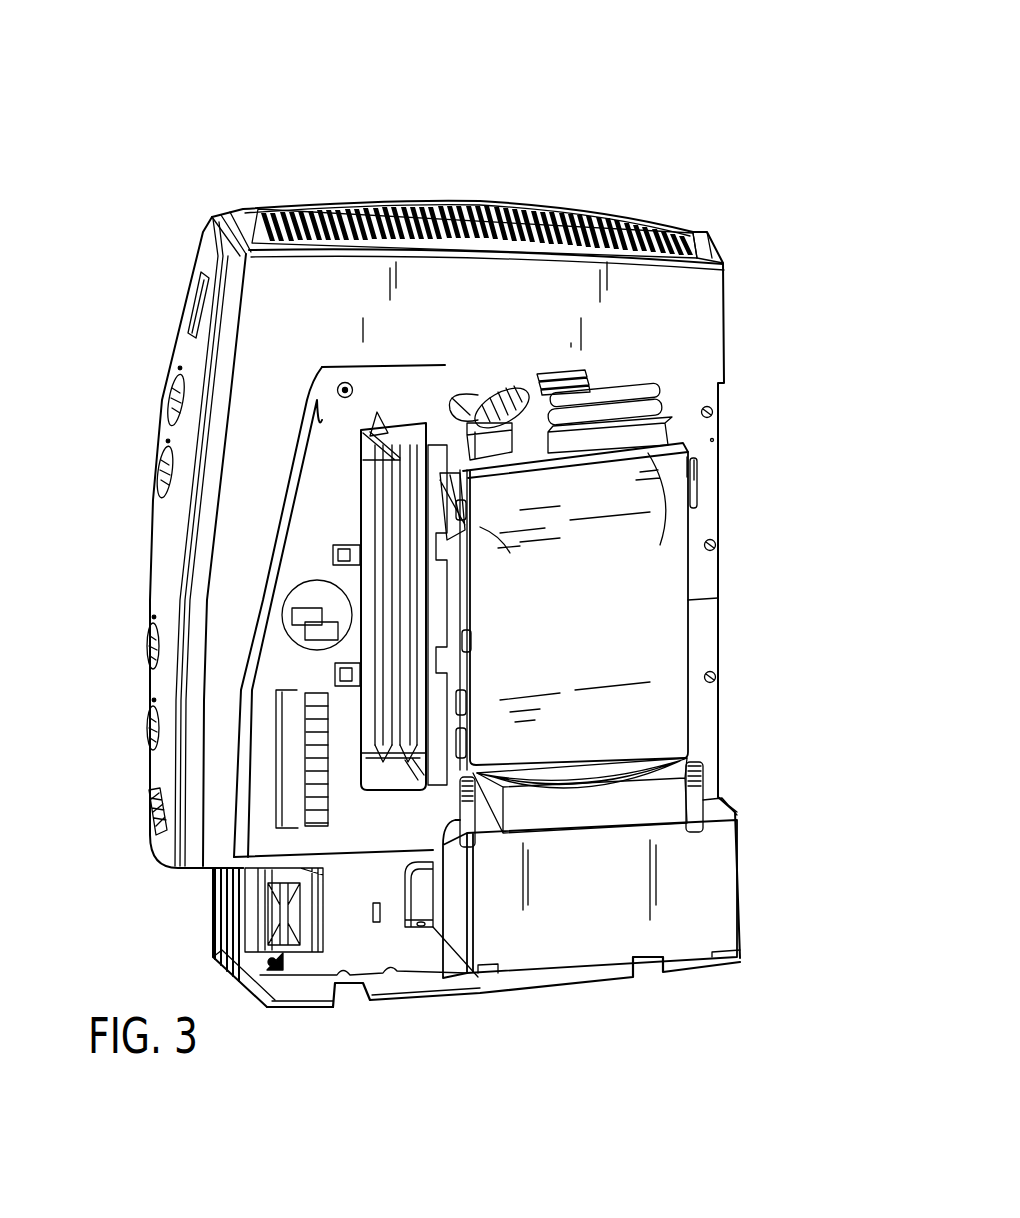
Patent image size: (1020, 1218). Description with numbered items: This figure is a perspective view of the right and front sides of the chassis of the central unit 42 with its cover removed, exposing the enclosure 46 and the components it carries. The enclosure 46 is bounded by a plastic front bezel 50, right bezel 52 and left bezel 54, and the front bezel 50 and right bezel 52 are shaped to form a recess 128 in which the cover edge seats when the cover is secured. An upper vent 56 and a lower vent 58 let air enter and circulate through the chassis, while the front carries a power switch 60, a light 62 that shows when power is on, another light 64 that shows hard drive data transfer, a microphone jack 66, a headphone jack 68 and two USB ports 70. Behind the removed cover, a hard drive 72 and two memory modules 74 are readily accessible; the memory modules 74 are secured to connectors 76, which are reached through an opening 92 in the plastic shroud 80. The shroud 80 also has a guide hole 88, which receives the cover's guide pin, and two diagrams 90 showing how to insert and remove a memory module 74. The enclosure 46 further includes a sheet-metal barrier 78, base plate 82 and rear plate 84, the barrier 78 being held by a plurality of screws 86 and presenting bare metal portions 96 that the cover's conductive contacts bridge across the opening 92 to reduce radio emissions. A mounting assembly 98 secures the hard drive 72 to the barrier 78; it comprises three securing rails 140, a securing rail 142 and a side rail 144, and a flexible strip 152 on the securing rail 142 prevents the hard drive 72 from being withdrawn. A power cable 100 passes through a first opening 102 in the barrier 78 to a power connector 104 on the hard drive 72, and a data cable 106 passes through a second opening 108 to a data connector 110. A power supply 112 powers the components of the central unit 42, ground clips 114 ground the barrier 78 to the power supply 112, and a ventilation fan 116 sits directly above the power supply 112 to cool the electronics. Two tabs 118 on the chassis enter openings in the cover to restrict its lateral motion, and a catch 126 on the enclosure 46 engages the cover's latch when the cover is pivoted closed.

The central unit 42 is at (579, 78).
The enclosure 46 is at (729, 327).
The front bezel 50 is at (204, 247).
The right bezel 52 is at (722, 261).
The left bezel 54 is at (707, 233).
The upper vent 56 is at (606, 226).
The lower vent 58 is at (210, 925).
The power switch 60 is at (190, 302).
The light 62 is at (171, 398).
The light 64 is at (161, 472).
The microphone jack 66 is at (150, 643).
The headphone jack 68 is at (150, 723).
The USB ports 70 is at (146, 803).
The hard drive 72 is at (680, 640).
The memory modules 74 is at (423, 435).
The connectors 76 is at (396, 425).
The barrier 78 is at (403, 957).
The shroud 80 is at (345, 430).
The base plate 82 is at (503, 997).
The rear plate 84 is at (733, 808).
The screws 86 is at (712, 410).
The guide hole 88 is at (345, 382).
The diagrams 90 is at (286, 598).
The opening 92 is at (380, 753).
The bare metal portions 96 is at (340, 548).
The mounting assembly 98 is at (479, 506).
The power cable 100 is at (500, 393).
The first opening 102 is at (452, 405).
The power connector 104 is at (540, 468).
The data cable 106 is at (660, 408).
The second opening 108 is at (612, 396).
The data connector 110 is at (663, 500).
The power supply 112 is at (727, 923).
The ground clips 114 is at (474, 843).
The ventilation fan 116 is at (662, 795).
The tabs 118 is at (352, 1007).
The catch 126 is at (480, 370).
The recess 128 is at (300, 470).
The securing rails 140 is at (697, 482).
The securing rail 142 is at (503, 545).
The side rail 144 is at (690, 602).
The flexible strip 152 is at (456, 405).